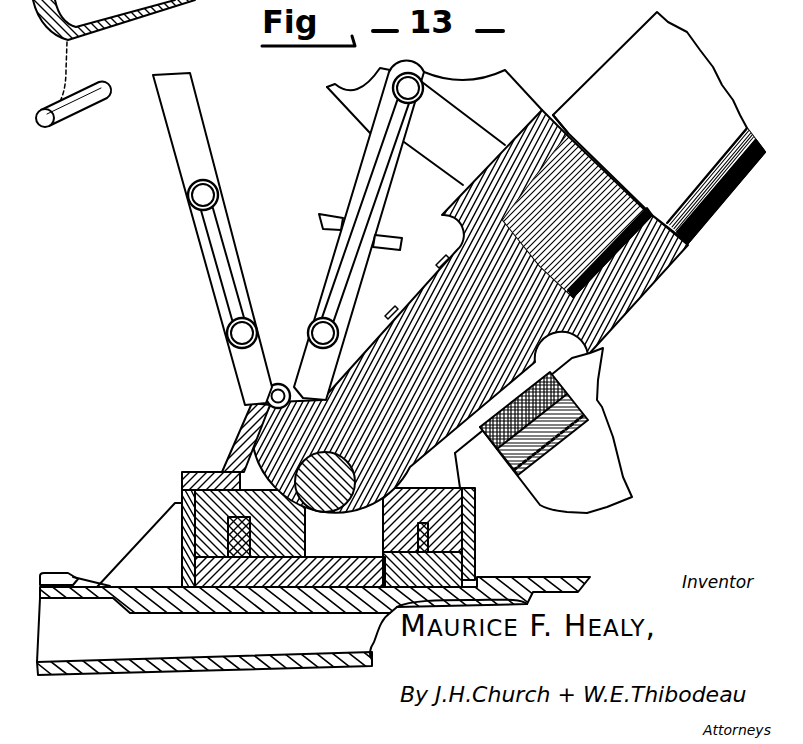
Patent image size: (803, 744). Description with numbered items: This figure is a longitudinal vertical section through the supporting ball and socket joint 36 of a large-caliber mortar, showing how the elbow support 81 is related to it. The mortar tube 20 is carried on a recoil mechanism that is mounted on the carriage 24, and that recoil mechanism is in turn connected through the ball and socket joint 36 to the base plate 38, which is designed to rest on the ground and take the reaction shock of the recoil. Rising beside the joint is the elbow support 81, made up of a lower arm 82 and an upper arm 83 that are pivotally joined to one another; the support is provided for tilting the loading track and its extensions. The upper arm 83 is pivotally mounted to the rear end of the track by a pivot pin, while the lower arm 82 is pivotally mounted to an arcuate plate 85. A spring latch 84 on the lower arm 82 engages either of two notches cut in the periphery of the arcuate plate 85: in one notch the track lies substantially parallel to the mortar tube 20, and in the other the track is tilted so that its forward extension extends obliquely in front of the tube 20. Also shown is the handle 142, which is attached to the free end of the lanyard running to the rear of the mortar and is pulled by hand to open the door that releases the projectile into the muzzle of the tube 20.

The mortar tube 20 is at (165, 4).
The carriage 24 is at (585, 510).
The ball and socket joint 36 is at (233, 440).
The base plate 38 is at (215, 675).
The elbow support 81 is at (198, 280).
The lower arm 82 is at (364, 265).
The upper arm 83 is at (239, 259).
The spring latch 84 is at (382, 239).
The arcuate plate 85 is at (337, 106).
The handle 142 is at (67, 122).